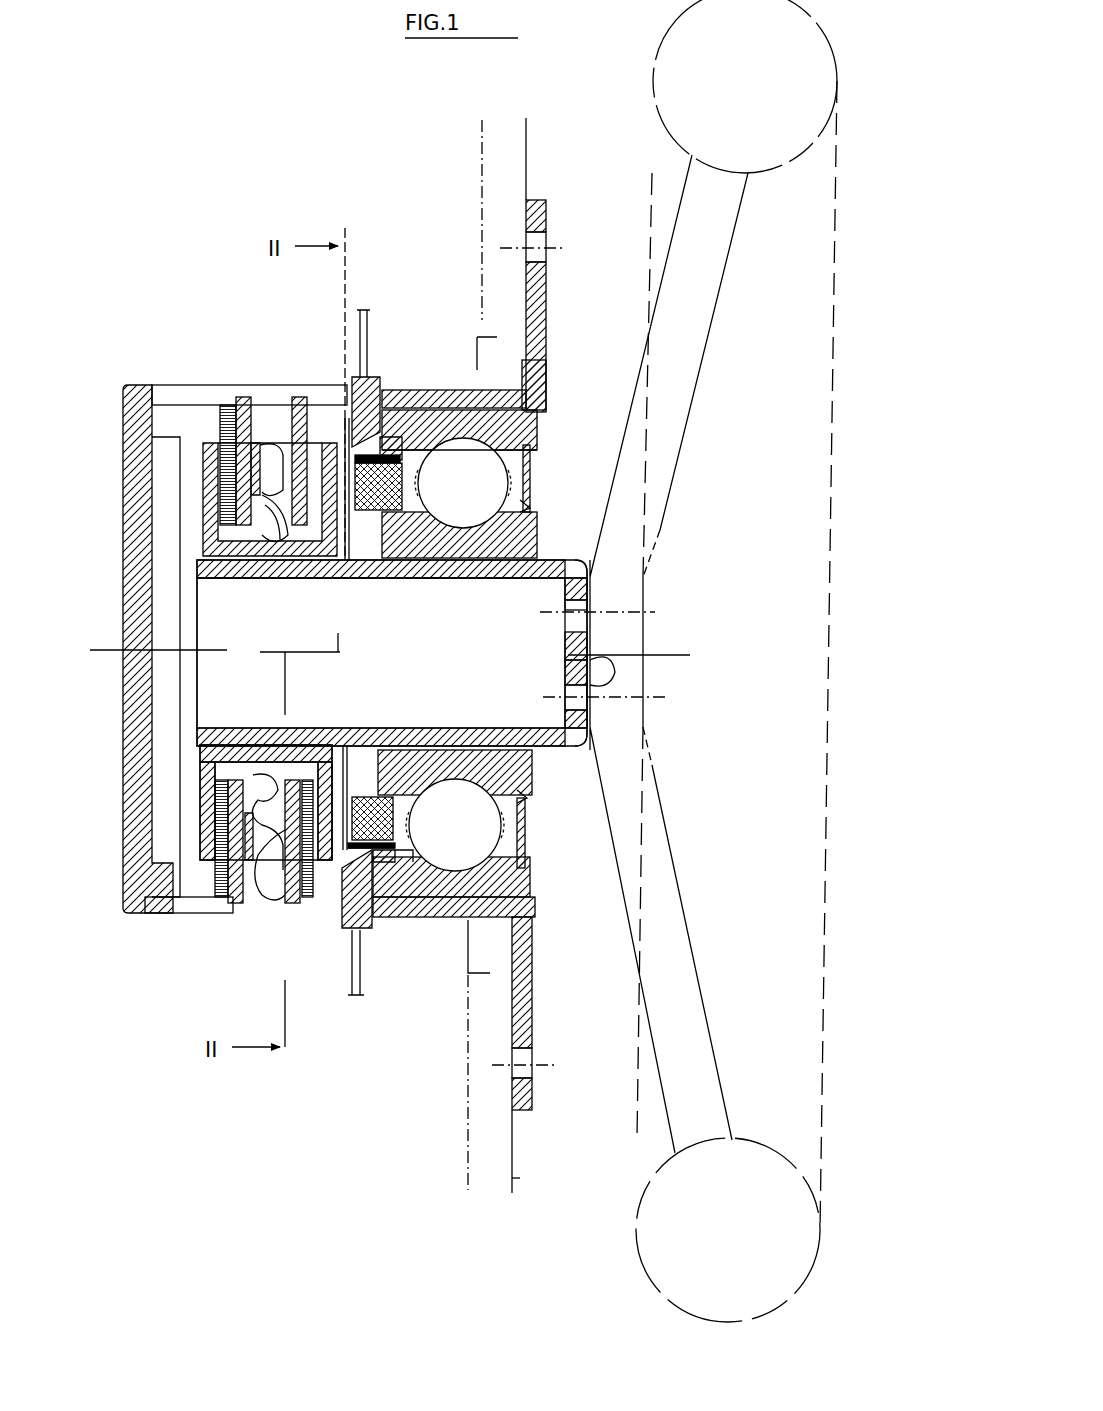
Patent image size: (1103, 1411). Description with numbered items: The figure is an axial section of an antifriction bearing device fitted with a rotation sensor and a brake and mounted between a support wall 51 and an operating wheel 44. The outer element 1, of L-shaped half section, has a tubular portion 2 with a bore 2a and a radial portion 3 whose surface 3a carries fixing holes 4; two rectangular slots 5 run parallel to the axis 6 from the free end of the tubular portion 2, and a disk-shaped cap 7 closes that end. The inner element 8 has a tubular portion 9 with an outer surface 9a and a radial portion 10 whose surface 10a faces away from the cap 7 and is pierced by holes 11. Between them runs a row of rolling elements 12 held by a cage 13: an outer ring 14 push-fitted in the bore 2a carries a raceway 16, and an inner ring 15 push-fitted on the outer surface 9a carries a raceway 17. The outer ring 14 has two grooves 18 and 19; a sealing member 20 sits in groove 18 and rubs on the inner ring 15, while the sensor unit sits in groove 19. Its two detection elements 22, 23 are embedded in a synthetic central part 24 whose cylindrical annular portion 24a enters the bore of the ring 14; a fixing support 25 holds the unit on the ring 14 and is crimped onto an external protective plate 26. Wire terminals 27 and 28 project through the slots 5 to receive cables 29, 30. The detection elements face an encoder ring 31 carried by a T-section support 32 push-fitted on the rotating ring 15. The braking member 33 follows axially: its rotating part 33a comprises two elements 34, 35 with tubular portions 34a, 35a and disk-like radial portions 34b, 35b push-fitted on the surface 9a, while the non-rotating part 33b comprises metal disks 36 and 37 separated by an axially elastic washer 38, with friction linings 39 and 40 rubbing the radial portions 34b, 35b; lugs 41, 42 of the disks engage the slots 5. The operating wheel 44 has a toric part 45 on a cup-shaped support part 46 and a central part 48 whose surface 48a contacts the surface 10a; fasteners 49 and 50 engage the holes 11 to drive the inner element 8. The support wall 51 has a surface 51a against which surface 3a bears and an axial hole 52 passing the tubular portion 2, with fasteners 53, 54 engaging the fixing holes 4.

The outer element 1 is at (550, 298).
The tubular portion 2 is at (418, 398).
The bore 2a is at (455, 395).
The radial portion 3 is at (530, 285).
The surface 3a is at (528, 215).
The fixing holes 4 is at (535, 240).
The slots 5 is at (160, 385).
The axis 6 is at (95, 650).
The cap 7 is at (123, 505).
The inner element 8 is at (416, 586).
The tubular portion 9 is at (455, 578).
The outer surface 9a is at (590, 560).
The radial portion 10 is at (568, 640).
The surface 10a is at (568, 692).
The holes 11 is at (565, 600).
The rolling elements 12 is at (465, 472).
The cage 13 is at (532, 468).
The outer ring 14 is at (510, 368).
The inner ring 15 is at (520, 540).
The raceway 16 is at (482, 415).
The raceway 17 is at (487, 500).
The annular groove 18 is at (527, 862).
The annular groove 19 is at (418, 875).
The sealing member 20 is at (525, 830).
The detection element 22 is at (345, 412).
The detection element 23 is at (348, 862).
The central part 24 is at (380, 862).
The cylindrical annular portion 24a is at (397, 862).
The fixing support 25 is at (388, 852).
The external protective plate 26 is at (333, 880).
The wire terminal 27 is at (375, 455).
The wire terminal 28 is at (365, 905).
The cable 29 is at (368, 312).
The cable 30 is at (352, 985).
The encoder ring 31 is at (348, 560).
The support 32 is at (365, 795).
The braking member 33 is at (198, 790).
The rotating part 33a is at (255, 745).
The non-rotating part 33b is at (232, 905).
The element 34 is at (197, 763).
The tubular axial portion 34a is at (230, 745).
The radial portion 34b is at (215, 812).
The element 35 is at (300, 750).
The tubular axial portion 35a is at (270, 745).
The radial portion 35b is at (330, 762).
The metal disk 36 is at (203, 843).
The metal disk 37 is at (240, 900).
The axially elastic washer 38 is at (270, 450).
The friction lining 39 is at (222, 890).
The friction lining 40 is at (285, 905).
The lug 41 is at (228, 440).
The lug 42 is at (300, 440).
The operating wheel 44 is at (652, 68).
The toric part 45 is at (663, 92).
The support part 46 is at (722, 282).
The central part 48 is at (625, 640).
The surface 48a is at (590, 678).
The fastener 49 is at (657, 612).
The fastener 50 is at (658, 700).
The support wall 51 is at (492, 1148).
The surface 51a is at (512, 1178).
The axial hole 52 is at (505, 960).
The fastener 53 is at (558, 248).
The fastener 54 is at (548, 1065).